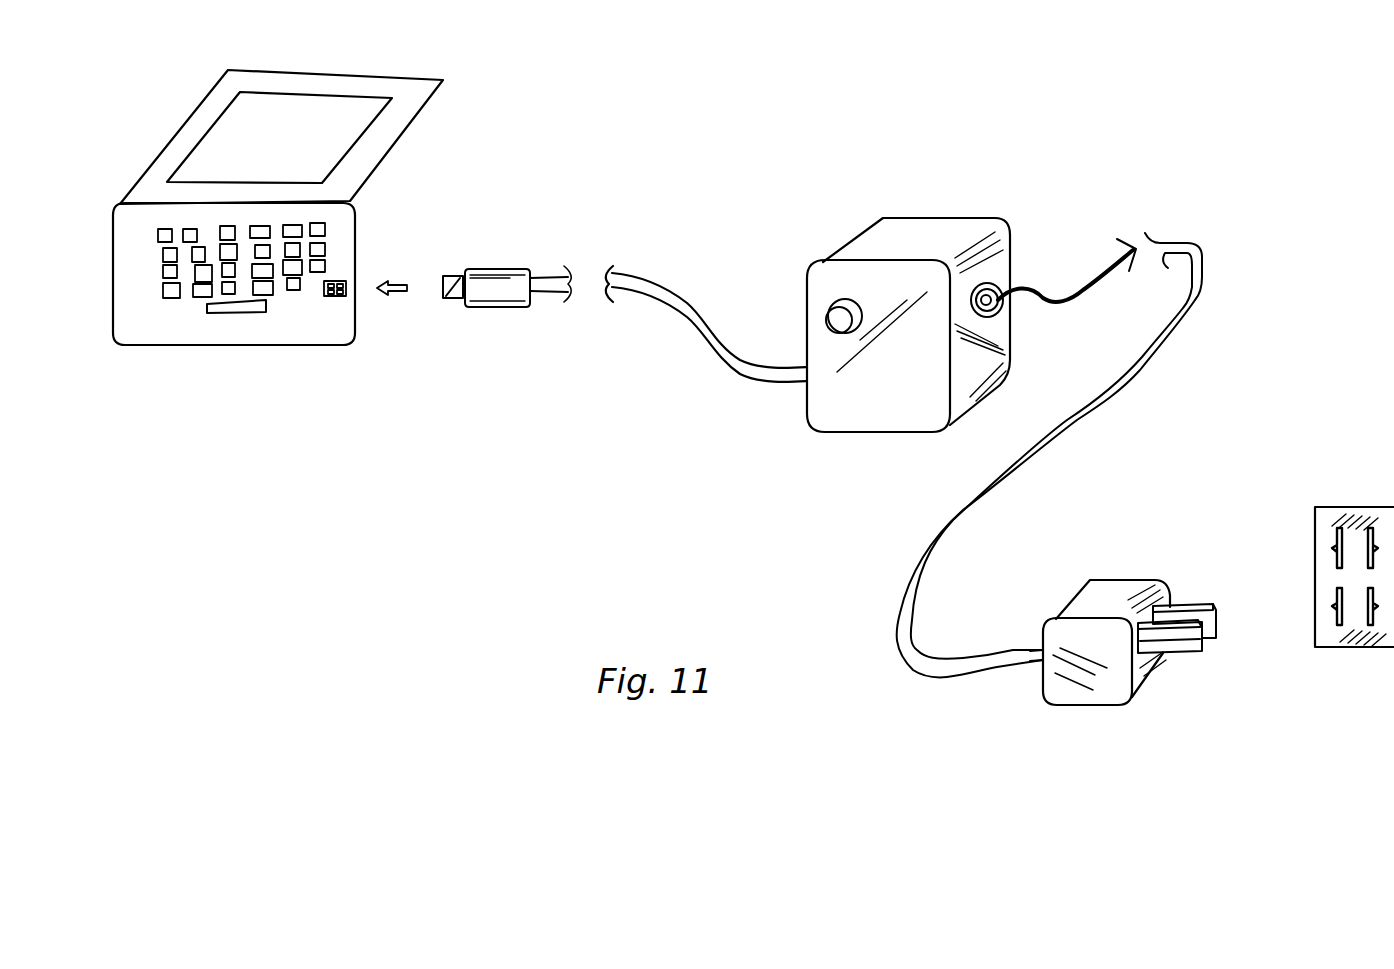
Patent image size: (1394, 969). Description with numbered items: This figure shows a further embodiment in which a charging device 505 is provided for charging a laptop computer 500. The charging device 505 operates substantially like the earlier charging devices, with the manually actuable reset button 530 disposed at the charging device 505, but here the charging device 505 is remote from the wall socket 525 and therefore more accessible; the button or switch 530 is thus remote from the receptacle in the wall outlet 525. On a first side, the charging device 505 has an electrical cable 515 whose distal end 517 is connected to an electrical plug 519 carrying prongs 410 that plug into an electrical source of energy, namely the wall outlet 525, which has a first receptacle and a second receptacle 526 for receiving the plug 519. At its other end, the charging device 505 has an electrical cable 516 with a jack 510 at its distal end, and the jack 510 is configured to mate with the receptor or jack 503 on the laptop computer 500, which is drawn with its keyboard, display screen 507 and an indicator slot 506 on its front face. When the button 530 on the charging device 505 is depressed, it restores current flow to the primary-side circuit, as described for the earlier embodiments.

The laptop computer 500 is at (429, 66).
The display screen 507 is at (288, 107).
The receptor or jack 503 is at (353, 285).
The indicator slot 506 is at (273, 306).
The jack 510 is at (497, 270).
The electrical cable 516 is at (641, 296).
The charging device 505 is at (917, 170).
The manually actuable reset button 530 is at (822, 318).
The electrical cable 515 is at (1040, 452).
The electrical plug 519 is at (1145, 580).
The prongs 410 is at (1211, 592).
The distal end 517 is at (1024, 681).
The wall outlet 525 is at (1372, 648).
The second receptacle 526 is at (1336, 538).